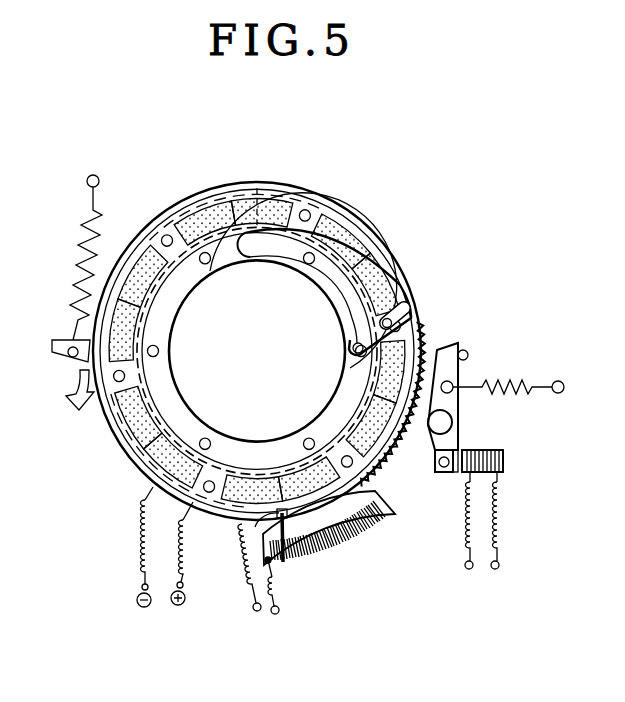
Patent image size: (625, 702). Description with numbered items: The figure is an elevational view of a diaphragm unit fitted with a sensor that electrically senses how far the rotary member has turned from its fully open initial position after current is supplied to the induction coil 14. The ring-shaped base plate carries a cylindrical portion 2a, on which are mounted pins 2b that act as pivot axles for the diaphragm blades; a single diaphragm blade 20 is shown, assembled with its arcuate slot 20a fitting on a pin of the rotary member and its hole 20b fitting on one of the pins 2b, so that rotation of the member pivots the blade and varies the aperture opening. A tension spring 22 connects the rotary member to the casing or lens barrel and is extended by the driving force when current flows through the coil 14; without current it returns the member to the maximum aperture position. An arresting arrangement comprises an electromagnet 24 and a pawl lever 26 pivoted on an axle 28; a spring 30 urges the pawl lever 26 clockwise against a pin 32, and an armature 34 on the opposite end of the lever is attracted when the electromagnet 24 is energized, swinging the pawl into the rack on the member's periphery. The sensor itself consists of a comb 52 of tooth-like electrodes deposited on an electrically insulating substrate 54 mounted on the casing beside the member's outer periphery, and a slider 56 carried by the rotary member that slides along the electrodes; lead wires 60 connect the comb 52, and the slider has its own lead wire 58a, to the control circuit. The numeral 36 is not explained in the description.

The cylindrical portion 2a is at (170, 398).
The pins 2b is at (307, 266).
The induction coil 14 is at (153, 480).
The diaphragm blade 20 is at (254, 250).
The arcuate slot 20a is at (410, 312).
The hole 20b is at (349, 351).
The tension spring 22 is at (72, 300).
The electromagnet 24 is at (500, 452).
The pawl lever 26 is at (452, 350).
The axle 28 is at (452, 422).
The spring 30 is at (512, 380).
The pin 32 is at (466, 352).
The armature 34 is at (449, 476).
The armature pivot 36 is at (441, 472).
The comb 52 is at (382, 510).
The electrically insulating substrate 54 is at (345, 556).
The slider 56 is at (256, 528).
The coil spring 58a is at (233, 567).
The lead wires 60 is at (278, 582).